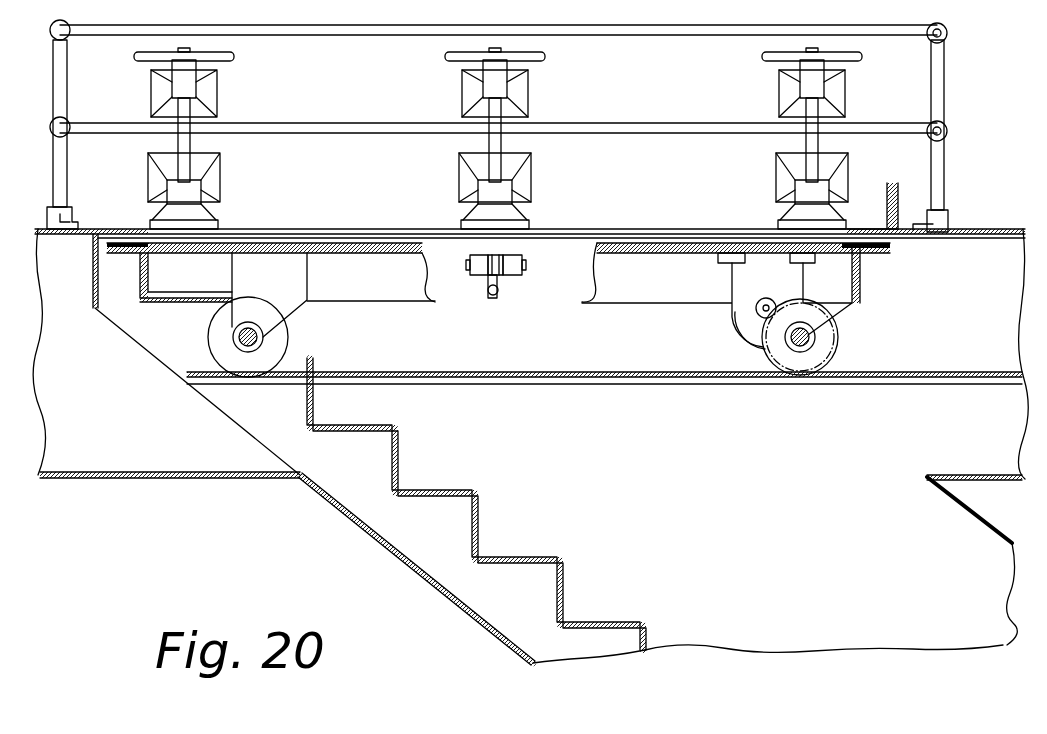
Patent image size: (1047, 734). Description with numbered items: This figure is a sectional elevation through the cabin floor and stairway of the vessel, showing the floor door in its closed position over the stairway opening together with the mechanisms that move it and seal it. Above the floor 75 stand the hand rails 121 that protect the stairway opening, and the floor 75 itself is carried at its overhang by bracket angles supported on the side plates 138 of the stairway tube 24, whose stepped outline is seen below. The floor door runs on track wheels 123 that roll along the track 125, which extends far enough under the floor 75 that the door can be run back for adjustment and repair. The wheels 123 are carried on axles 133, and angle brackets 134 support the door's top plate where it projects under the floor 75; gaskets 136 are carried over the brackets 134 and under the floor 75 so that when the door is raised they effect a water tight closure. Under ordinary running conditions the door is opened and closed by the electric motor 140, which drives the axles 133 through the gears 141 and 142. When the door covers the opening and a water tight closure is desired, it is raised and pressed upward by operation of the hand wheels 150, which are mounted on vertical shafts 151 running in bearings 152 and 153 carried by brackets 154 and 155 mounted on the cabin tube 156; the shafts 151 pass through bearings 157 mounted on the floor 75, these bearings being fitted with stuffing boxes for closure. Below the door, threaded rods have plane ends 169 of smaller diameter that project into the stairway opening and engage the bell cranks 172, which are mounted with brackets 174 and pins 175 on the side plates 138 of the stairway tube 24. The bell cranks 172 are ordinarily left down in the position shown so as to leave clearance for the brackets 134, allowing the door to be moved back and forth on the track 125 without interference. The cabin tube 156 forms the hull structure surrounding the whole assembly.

The stairway tube 24 is at (560, 557).
The floor 75 is at (982, 230).
The hand rails 121 is at (687, 40).
The track wheel 123 is at (290, 338).
The track 125 is at (927, 373).
The axle 133 is at (808, 335).
The angle bracket 134 is at (878, 257).
The gasket 136 is at (890, 247).
The side plate 138 is at (383, 547).
The electric motor 140 is at (732, 277).
The gear 141 is at (757, 307).
The gear 142 is at (762, 348).
The hand wheel 150 is at (237, 55).
The vertical shaft 151 is at (193, 138).
The bearing 152 is at (153, 88).
The bearing 153 is at (162, 190).
The bracket 154 is at (220, 90).
The bracket 155 is at (222, 185).
The cabin tube 156 is at (162, 478).
The bearing 157 is at (213, 222).
The plane end 169 is at (488, 290).
The bell crank 172 is at (493, 297).
The bracket 174 is at (517, 275).
The pin 175 is at (523, 263).